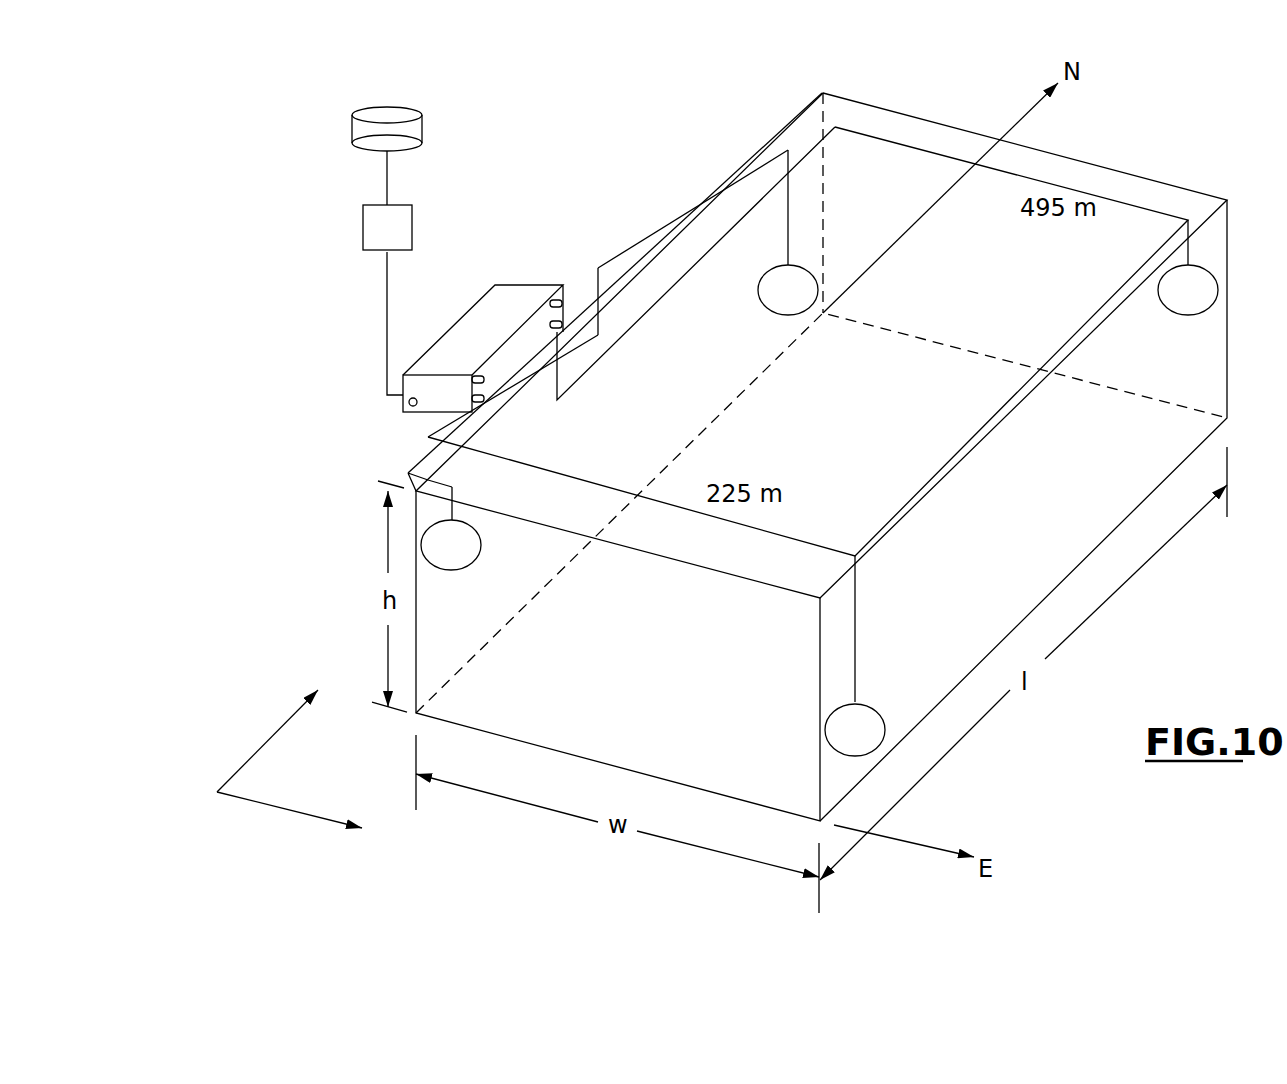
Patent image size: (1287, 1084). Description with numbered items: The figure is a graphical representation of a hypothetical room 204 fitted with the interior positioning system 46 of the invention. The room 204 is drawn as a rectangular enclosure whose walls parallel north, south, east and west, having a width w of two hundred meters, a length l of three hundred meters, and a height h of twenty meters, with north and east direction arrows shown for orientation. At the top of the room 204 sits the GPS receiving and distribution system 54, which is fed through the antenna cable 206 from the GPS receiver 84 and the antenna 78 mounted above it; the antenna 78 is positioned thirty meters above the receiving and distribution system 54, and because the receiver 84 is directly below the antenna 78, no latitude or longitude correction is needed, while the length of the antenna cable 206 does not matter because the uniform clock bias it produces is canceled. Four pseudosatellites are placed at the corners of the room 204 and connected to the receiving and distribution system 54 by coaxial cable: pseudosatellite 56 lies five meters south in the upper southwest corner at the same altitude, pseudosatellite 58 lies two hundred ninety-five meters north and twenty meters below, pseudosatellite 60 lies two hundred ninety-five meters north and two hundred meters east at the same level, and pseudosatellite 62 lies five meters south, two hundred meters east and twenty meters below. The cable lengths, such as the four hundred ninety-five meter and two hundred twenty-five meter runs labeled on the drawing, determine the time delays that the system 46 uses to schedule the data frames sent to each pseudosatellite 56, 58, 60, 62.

The interior positioning system 46 is at (287, 527).
The receiving and distribution system 54 is at (527, 285).
The pseudosatellite 56 is at (455, 570).
The pseudosatellite 58 is at (778, 314).
The pseudosatellite 60 is at (1188, 315).
The pseudosatellite 62 is at (866, 707).
The antenna 78 is at (418, 115).
The GPS receiver 84 is at (363, 222).
The room 204 is at (1160, 177).
The antenna cable 206 is at (388, 300).